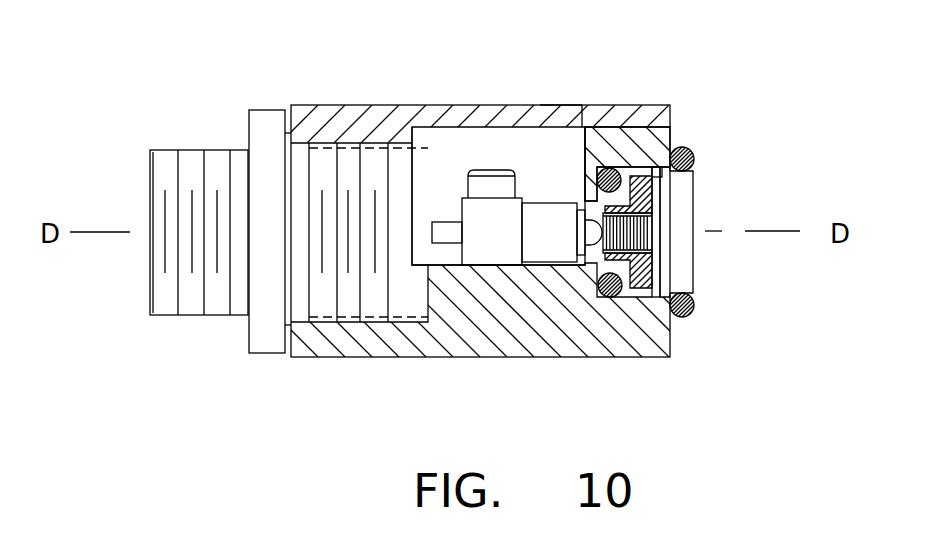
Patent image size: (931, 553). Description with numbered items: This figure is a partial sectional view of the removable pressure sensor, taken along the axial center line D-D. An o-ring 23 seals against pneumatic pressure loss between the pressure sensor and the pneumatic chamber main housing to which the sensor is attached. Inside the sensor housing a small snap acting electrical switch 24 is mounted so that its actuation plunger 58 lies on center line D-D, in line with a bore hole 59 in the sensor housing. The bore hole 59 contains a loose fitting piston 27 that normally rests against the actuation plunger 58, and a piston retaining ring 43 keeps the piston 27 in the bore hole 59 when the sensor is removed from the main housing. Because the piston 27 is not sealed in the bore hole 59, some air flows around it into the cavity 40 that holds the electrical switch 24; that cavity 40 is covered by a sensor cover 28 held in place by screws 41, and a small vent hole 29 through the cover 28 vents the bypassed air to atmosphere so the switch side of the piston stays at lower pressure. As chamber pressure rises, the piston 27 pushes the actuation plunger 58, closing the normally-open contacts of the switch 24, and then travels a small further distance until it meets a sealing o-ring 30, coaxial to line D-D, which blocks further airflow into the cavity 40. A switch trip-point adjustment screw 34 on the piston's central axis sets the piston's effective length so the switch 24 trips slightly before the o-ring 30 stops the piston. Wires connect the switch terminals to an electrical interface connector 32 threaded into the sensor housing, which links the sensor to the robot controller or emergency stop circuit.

The o-ring 23 is at (685, 275).
The snap acting electrical switch 24 is at (500, 250).
The piston 27 is at (655, 300).
The sensor cover 28 is at (382, 115).
The vent hole 29 is at (573, 116).
The sealing o-ring 30 is at (613, 297).
The electrical interface connector 32 is at (213, 172).
The switch trip-point adjustment screw 34 is at (643, 220).
The cavity 40 is at (493, 147).
The screws 41 is at (622, 115).
The piston retaining ring 43 is at (658, 168).
The actuation plunger 58 is at (593, 237).
The bore hole 59 is at (647, 283).